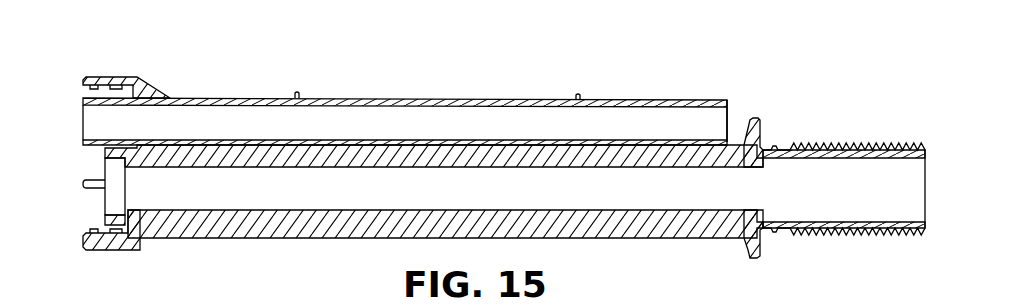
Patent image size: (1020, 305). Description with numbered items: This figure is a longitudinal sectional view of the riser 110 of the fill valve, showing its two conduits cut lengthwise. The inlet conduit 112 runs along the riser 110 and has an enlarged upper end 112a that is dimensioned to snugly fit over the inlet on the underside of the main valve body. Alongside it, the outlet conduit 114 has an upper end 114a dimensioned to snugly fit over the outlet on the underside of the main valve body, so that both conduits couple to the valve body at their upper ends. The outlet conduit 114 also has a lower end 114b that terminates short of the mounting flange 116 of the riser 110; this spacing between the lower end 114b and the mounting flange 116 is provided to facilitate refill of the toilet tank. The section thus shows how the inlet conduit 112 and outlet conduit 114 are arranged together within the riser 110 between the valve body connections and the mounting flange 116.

The riser 110 is at (357, 78).
The inlet conduit 112 is at (258, 238).
The enlarged upper end 112a is at (105, 203).
The outlet conduit 114 is at (643, 100).
The upper end 114a is at (83, 122).
The lower end 114b is at (727, 104).
The mounting flange 116 is at (755, 258).